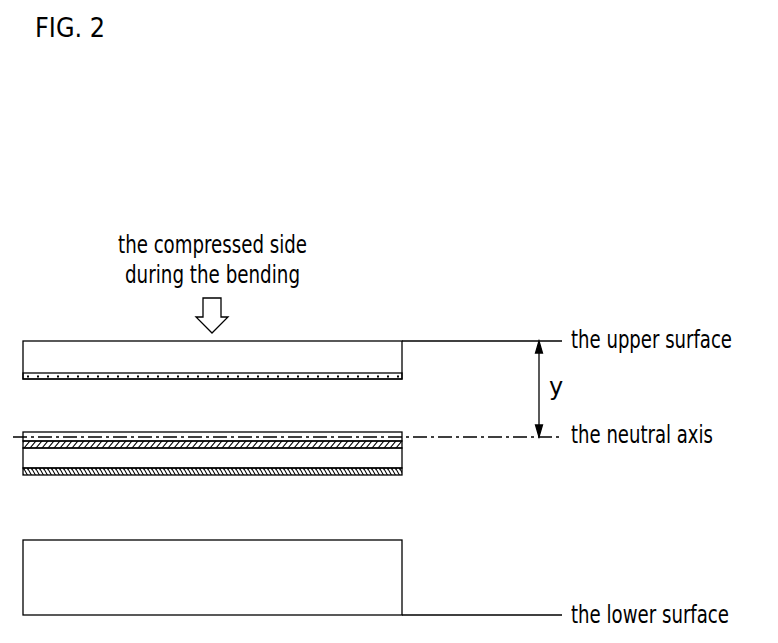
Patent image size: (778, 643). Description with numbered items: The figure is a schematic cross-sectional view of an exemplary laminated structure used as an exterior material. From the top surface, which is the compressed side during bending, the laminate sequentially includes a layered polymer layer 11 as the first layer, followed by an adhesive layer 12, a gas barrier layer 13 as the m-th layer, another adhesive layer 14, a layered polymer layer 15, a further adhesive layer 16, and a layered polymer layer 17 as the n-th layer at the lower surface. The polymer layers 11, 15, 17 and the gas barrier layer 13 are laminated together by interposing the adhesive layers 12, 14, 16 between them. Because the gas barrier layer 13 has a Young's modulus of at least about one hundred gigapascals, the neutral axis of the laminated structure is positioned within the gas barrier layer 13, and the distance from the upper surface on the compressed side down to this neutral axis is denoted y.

The layered polymer layer 11 is at (402, 356).
The adhesive layer 12 is at (402, 377).
The gas barrier layer 13 is at (402, 432).
The adhesive layer 14 is at (402, 445).
The layered polymer layer 15 is at (402, 460).
The adhesive layer 16 is at (402, 472).
The layered polymer layer 17 is at (402, 575).